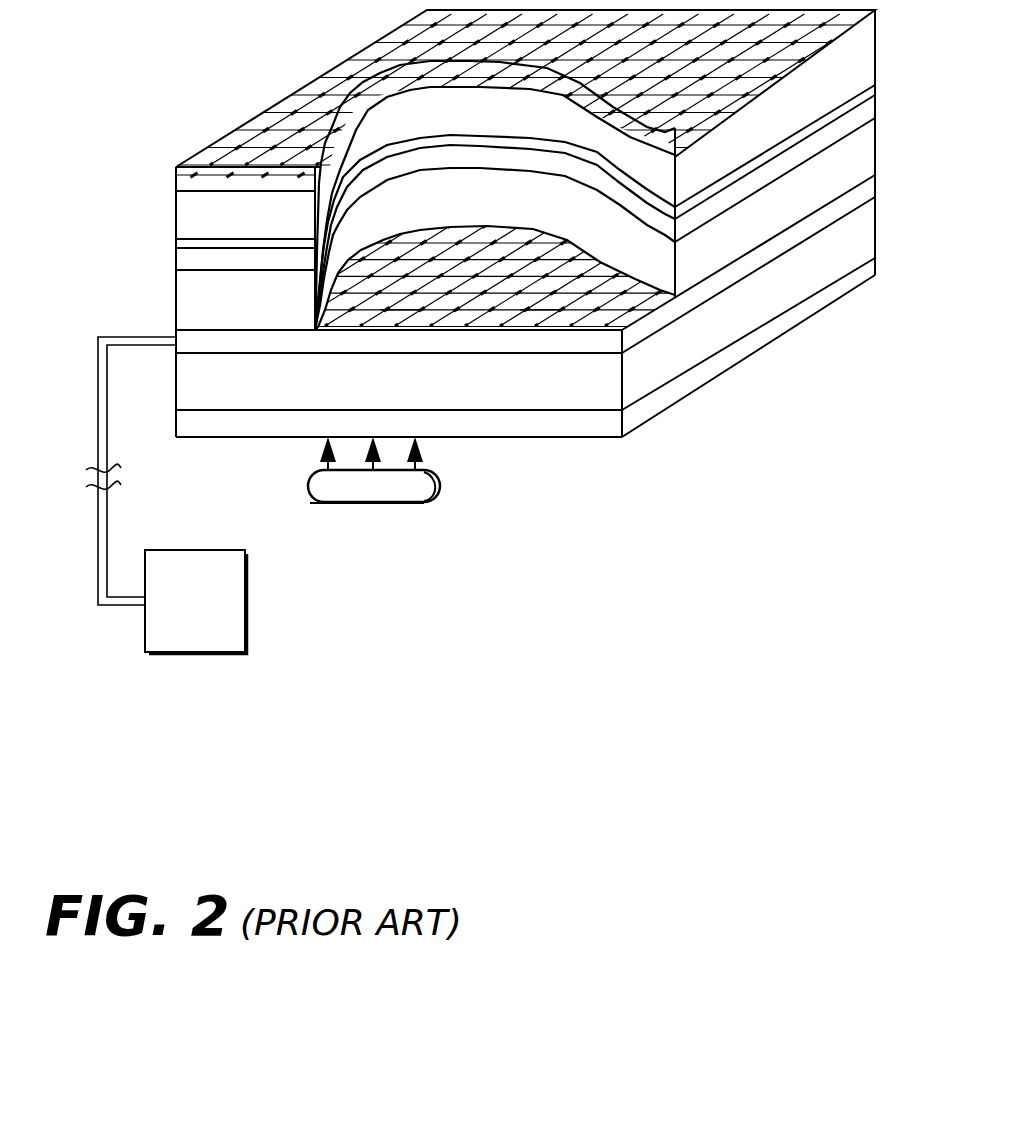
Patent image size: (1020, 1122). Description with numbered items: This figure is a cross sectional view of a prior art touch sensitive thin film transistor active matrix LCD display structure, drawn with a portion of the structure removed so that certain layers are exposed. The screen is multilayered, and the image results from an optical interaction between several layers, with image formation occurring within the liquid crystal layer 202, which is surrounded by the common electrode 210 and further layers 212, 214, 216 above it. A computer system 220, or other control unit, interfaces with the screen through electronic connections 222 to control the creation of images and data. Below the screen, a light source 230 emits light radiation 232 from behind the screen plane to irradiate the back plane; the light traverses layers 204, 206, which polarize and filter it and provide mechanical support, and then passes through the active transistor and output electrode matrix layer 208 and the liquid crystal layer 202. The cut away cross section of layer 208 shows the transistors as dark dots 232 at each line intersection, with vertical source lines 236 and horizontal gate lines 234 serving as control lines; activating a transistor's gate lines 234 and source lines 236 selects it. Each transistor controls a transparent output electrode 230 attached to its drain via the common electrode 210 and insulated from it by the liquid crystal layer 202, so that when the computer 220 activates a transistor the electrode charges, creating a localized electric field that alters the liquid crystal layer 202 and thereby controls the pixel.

The liquid crystal layer 202 is at (176, 311).
The layer 204 is at (875, 277).
The layer 206 is at (177, 385).
The active transistor and output electrode matrix layer 208 is at (875, 190).
The common electrode 210 is at (176, 266).
The layer 212 is at (176, 243).
The layer 214 is at (176, 197).
The layer 216 is at (875, 22).
The computer system 220 is at (196, 602).
The electronic connections 222 is at (107, 527).
The light source 230 is at (400, 308).
The light radiation 232 is at (416, 462).
The gate lines 234 is at (643, 312).
The source lines 236 is at (527, 330).